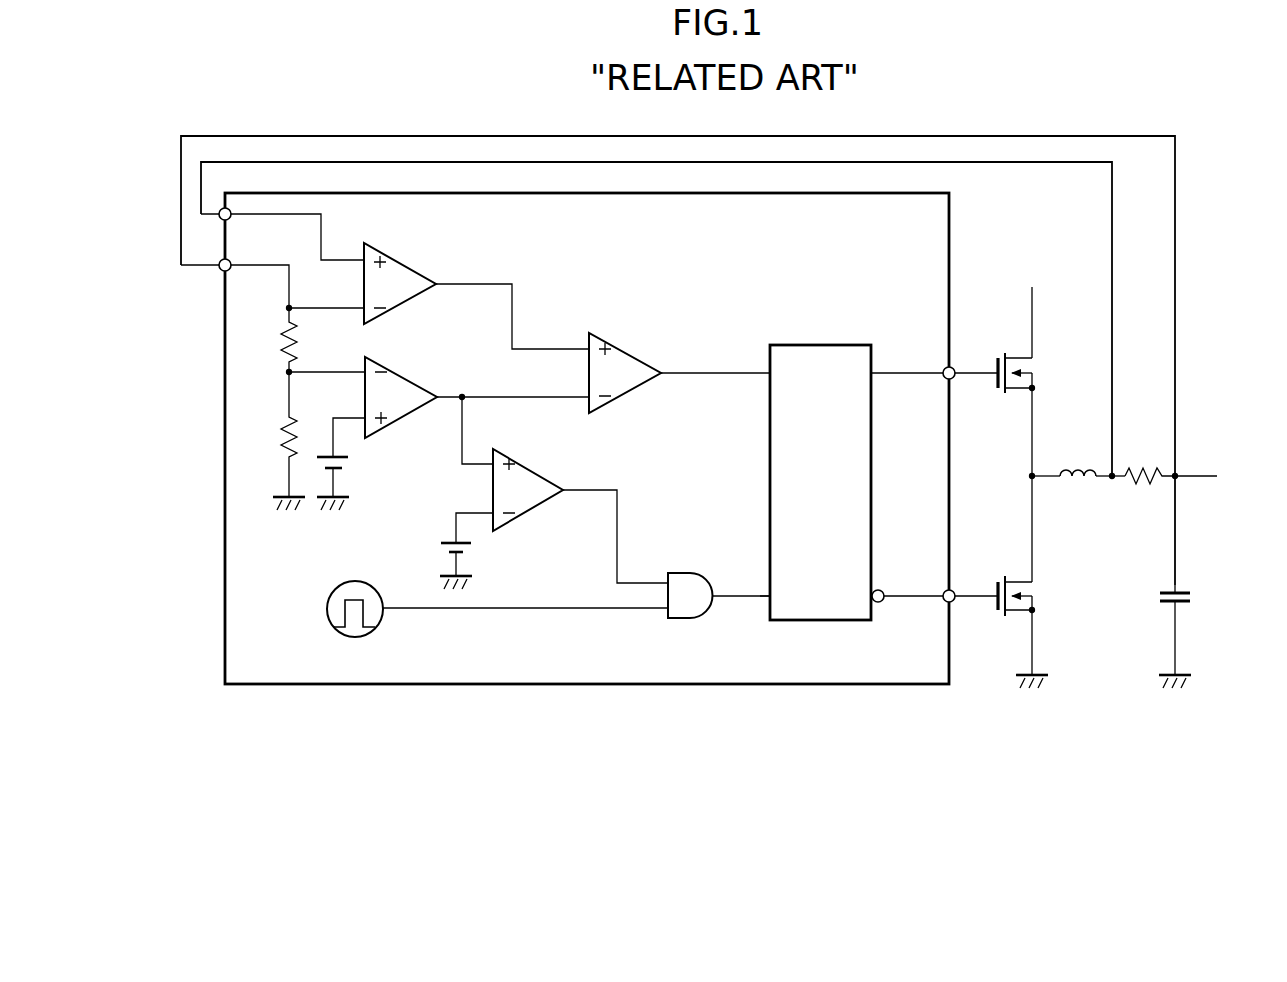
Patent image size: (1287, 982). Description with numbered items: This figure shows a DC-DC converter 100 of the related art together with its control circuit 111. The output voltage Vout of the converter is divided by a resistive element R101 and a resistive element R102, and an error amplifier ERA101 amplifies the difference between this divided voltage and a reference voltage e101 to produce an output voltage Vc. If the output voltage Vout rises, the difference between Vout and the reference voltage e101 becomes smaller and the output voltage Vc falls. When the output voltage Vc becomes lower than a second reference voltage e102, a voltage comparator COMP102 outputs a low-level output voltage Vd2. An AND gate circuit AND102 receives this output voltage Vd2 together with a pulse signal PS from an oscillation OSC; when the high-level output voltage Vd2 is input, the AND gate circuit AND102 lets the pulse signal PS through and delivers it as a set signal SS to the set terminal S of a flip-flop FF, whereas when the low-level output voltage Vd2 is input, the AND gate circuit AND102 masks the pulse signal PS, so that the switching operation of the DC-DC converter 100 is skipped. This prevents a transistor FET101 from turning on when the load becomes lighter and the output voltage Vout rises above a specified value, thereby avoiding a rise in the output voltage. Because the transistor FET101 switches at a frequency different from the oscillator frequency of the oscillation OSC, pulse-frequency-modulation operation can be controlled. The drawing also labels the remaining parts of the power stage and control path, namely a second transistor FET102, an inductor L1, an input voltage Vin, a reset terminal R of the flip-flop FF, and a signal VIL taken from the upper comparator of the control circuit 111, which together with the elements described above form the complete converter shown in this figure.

The DC-DC converter 100 is at (1080, 111).
The control circuit 111 is at (951, 222).
The resistive element R101 is at (278, 340).
The resistive element R102 is at (276, 436).
The error amplifier ERA101 is at (426, 355).
The reference voltage e101 is at (362, 464).
The reference voltage e102 is at (485, 551).
The voltage comparator COMP102 is at (547, 447).
The AND gate circuit AND102 is at (687, 572).
The oscillation OSC is at (327, 609).
The flip-flop FF is at (822, 622).
The transistor FET101 is at (1035, 369).
The synchronous rectification transistor FET102 is at (1057, 632).
The inductor L1 is at (1078, 458).
The comparison signal VIL is at (476, 296).
The output voltage Vc is at (509, 418).
The output voltage Vd2 is at (615, 523).
The pulse signal PS is at (525, 622).
The set signal SS is at (741, 609).
The reset input R is at (679, 373).
The set terminal S is at (759, 582).
The input voltage Vin is at (1033, 309).
The output voltage Vout is at (1196, 577).